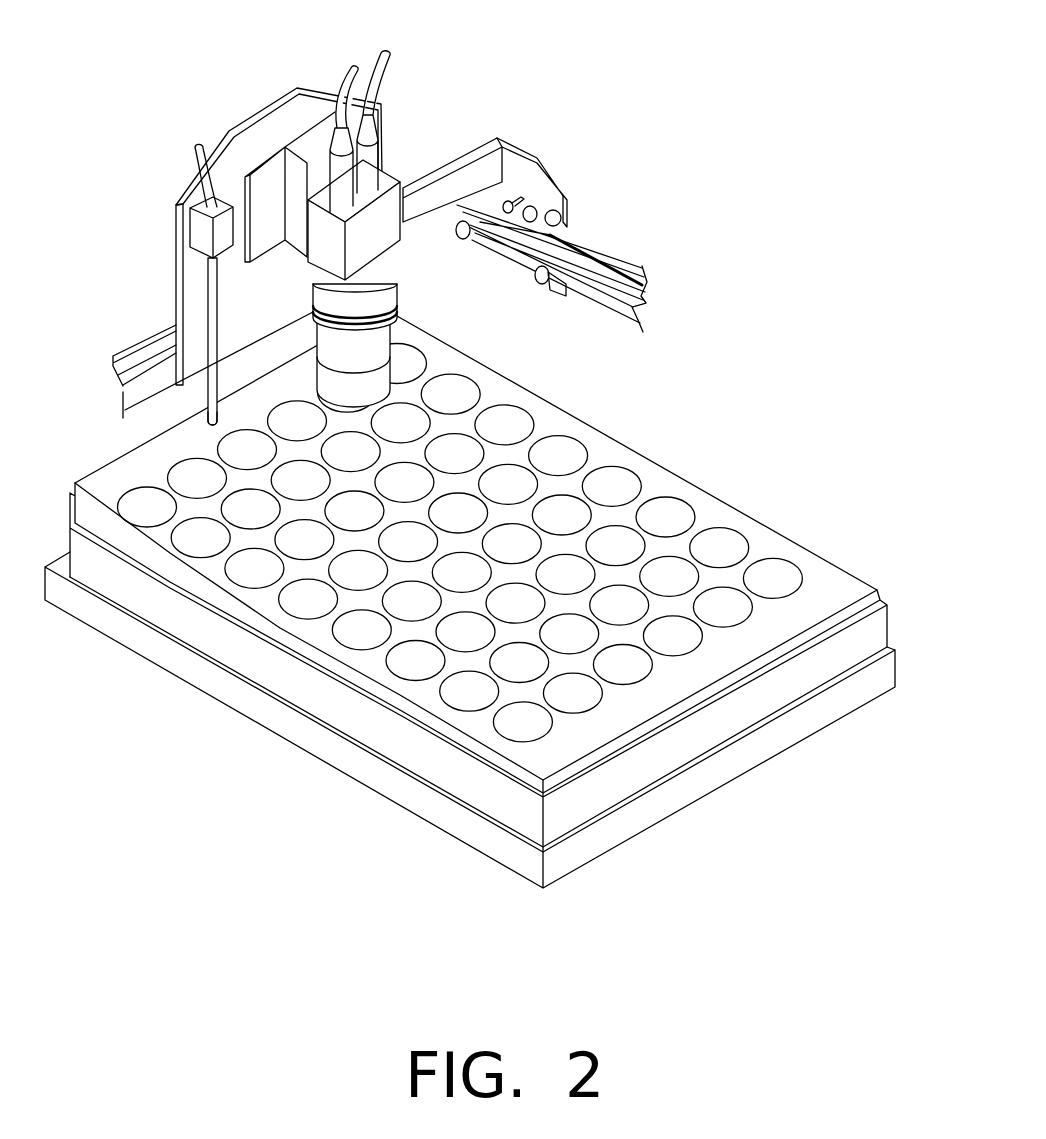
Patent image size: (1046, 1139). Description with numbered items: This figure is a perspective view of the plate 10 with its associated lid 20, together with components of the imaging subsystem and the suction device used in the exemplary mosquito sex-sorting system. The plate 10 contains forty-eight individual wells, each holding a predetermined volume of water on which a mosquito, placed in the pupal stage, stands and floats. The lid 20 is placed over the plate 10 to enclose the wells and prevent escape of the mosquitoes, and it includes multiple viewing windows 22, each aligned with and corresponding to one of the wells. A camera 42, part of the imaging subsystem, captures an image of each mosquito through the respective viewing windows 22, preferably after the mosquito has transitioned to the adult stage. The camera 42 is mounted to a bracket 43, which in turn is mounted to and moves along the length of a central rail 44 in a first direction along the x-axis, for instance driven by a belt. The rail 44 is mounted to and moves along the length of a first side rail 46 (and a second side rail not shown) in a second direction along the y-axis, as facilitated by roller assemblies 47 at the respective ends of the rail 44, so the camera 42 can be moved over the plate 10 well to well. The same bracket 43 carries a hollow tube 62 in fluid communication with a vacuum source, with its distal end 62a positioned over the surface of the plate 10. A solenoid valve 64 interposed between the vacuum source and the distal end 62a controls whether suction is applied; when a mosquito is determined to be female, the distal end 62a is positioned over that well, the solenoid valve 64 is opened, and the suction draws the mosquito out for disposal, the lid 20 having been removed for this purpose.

The plate 10 is at (890, 632).
The lid 20 is at (878, 591).
The viewing windows 22 is at (737, 530).
The camera 42 is at (445, 351).
The bracket 43 is at (262, 104).
The central rail 44 is at (147, 343).
The first side rail 46 is at (608, 246).
The roller assemblies 47 is at (505, 143).
The hollow tube 62 is at (208, 393).
The distal end 62a is at (207, 425).
The solenoid valve 64 is at (188, 212).